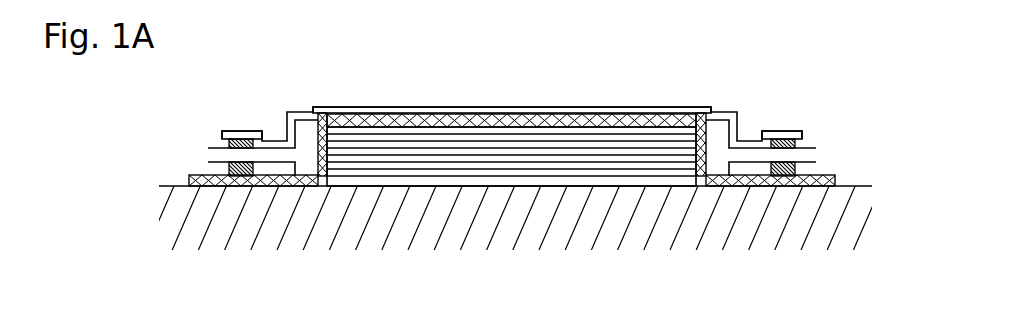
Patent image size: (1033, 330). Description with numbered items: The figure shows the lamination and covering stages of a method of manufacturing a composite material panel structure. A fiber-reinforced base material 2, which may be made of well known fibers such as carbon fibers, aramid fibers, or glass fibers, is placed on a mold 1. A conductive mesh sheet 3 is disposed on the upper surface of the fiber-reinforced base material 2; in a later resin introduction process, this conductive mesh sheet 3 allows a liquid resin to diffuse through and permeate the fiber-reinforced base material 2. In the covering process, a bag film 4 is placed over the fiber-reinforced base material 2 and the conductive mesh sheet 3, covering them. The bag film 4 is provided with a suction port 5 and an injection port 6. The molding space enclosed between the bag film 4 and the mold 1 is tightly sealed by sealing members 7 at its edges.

The mold 1 is at (658, 222).
The fiber-reinforced base material 2 is at (530, 175).
The conductive mesh sheet 3 is at (478, 122).
The bag film 4 is at (570, 110).
The suction port 5 is at (304, 128).
The injection port 6 is at (715, 135).
The sealing members 7 is at (240, 131).